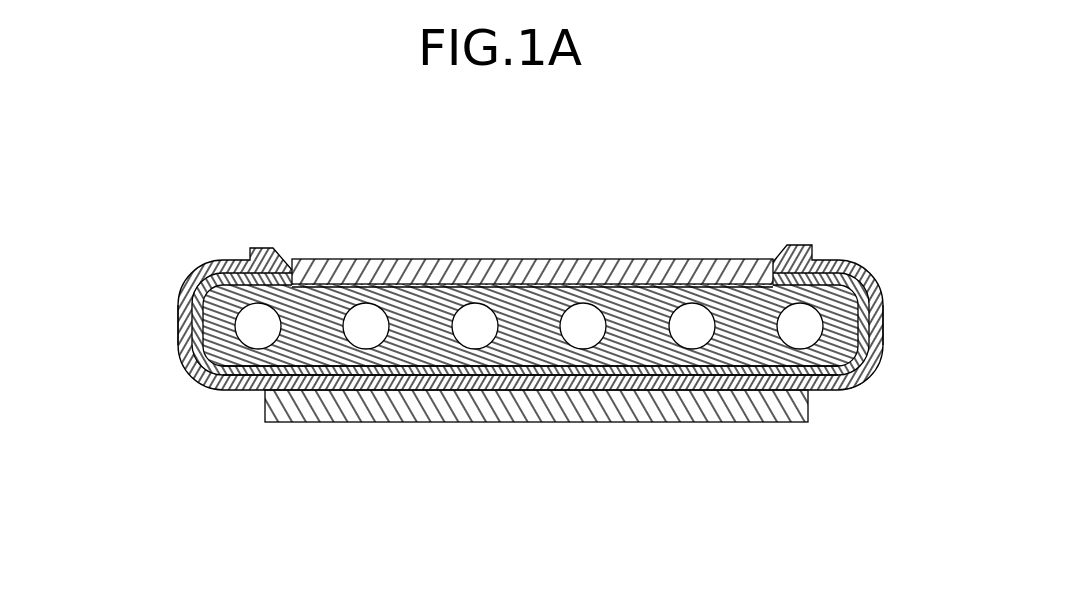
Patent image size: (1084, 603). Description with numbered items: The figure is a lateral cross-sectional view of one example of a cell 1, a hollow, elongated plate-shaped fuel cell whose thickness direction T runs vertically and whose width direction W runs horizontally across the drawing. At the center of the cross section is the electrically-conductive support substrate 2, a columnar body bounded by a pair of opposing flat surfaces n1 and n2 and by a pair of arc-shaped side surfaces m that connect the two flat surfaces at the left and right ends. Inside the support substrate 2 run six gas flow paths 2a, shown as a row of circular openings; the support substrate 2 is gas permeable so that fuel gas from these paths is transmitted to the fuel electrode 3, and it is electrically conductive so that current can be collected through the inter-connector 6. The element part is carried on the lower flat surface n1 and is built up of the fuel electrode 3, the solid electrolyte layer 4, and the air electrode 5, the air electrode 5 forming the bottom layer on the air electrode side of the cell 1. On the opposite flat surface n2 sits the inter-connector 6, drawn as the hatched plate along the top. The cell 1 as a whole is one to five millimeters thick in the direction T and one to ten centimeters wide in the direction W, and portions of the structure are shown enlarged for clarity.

The cell 1 is at (542, 301).
The electrically-conductive support substrate 2 is at (417, 345).
The gas flow paths 2a is at (462, 322).
The fuel electrode 3 is at (852, 378).
The solid electrolyte layer 4 is at (210, 388).
The air electrode 5 is at (693, 412).
The inter-connector 6 is at (548, 275).
The flat surface n1 is at (515, 368).
The flat surface n2 is at (637, 283).
The width direction W is at (678, 225).
The thickness direction T is at (84, 383).
The arc-shaped side surfaces m is at (180, 325).